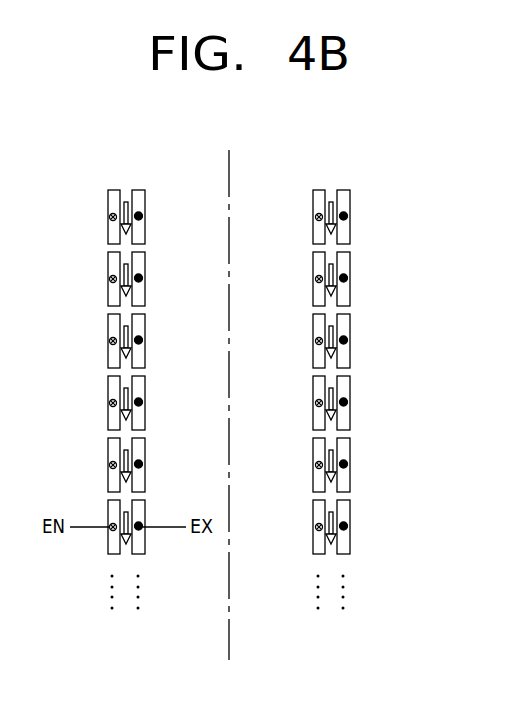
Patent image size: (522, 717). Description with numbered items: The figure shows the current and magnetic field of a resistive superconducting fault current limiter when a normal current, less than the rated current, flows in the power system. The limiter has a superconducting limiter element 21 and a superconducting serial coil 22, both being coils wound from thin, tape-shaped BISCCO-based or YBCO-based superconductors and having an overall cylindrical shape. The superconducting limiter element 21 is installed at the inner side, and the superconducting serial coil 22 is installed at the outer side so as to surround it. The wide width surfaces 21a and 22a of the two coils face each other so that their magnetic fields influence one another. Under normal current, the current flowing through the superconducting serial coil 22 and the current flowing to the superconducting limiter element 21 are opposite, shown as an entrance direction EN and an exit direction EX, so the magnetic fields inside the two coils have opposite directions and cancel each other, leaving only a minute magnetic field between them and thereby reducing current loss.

The superconducting limiter element 21 is at (143, 186).
The superconducting serial coil 22 is at (109, 186).
The wide width surface 21a is at (131, 186).
The wide width surface 22a is at (121, 186).